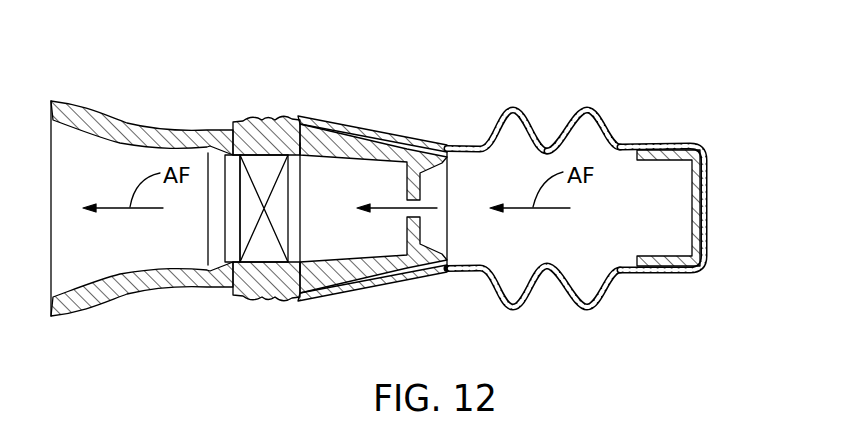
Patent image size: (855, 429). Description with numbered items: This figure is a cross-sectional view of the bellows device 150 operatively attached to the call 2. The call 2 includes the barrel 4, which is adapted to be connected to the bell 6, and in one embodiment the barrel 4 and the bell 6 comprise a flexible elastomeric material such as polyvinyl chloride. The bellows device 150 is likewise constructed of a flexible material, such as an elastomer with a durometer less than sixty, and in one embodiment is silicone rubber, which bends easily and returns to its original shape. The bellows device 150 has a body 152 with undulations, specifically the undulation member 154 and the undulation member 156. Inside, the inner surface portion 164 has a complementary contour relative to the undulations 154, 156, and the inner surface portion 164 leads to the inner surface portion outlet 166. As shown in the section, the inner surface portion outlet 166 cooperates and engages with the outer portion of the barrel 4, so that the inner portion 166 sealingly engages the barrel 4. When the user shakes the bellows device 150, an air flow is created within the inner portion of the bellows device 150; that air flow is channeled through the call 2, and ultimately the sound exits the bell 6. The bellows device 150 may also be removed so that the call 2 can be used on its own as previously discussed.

The call 2 is at (222, 78).
The barrel 4 is at (318, 119).
The bell 6 is at (128, 293).
The bellows device 150 is at (577, 215).
The body 152 is at (652, 143).
The undulation member 154 is at (587, 110).
The undulation member 156 is at (517, 112).
The inner surface portion 164 is at (500, 278).
The inner surface portion outlet 166 is at (340, 297).